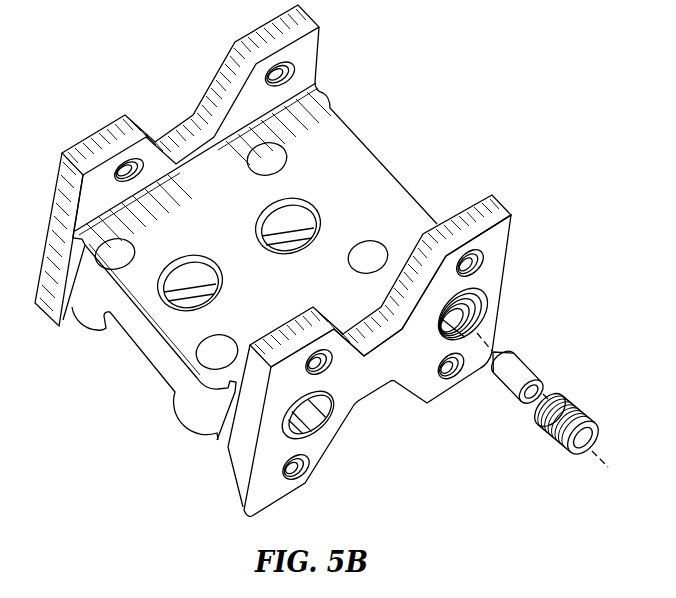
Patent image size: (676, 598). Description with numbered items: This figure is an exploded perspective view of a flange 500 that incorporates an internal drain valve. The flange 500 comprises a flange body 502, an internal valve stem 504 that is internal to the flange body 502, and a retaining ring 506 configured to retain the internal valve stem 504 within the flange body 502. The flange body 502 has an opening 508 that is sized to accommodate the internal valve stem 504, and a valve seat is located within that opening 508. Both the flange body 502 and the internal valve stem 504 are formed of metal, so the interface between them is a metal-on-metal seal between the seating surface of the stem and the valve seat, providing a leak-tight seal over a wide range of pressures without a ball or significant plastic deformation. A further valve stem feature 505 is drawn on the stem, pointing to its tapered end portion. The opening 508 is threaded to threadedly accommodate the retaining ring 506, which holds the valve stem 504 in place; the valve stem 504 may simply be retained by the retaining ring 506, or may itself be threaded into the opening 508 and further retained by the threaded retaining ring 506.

The flange 500 is at (340, 260).
The flange body 502 is at (237, 467).
The internal valve stem 504 is at (513, 391).
The set screw tip 505 is at (529, 368).
The retaining ring 506 is at (572, 402).
The opening 508 is at (480, 306).